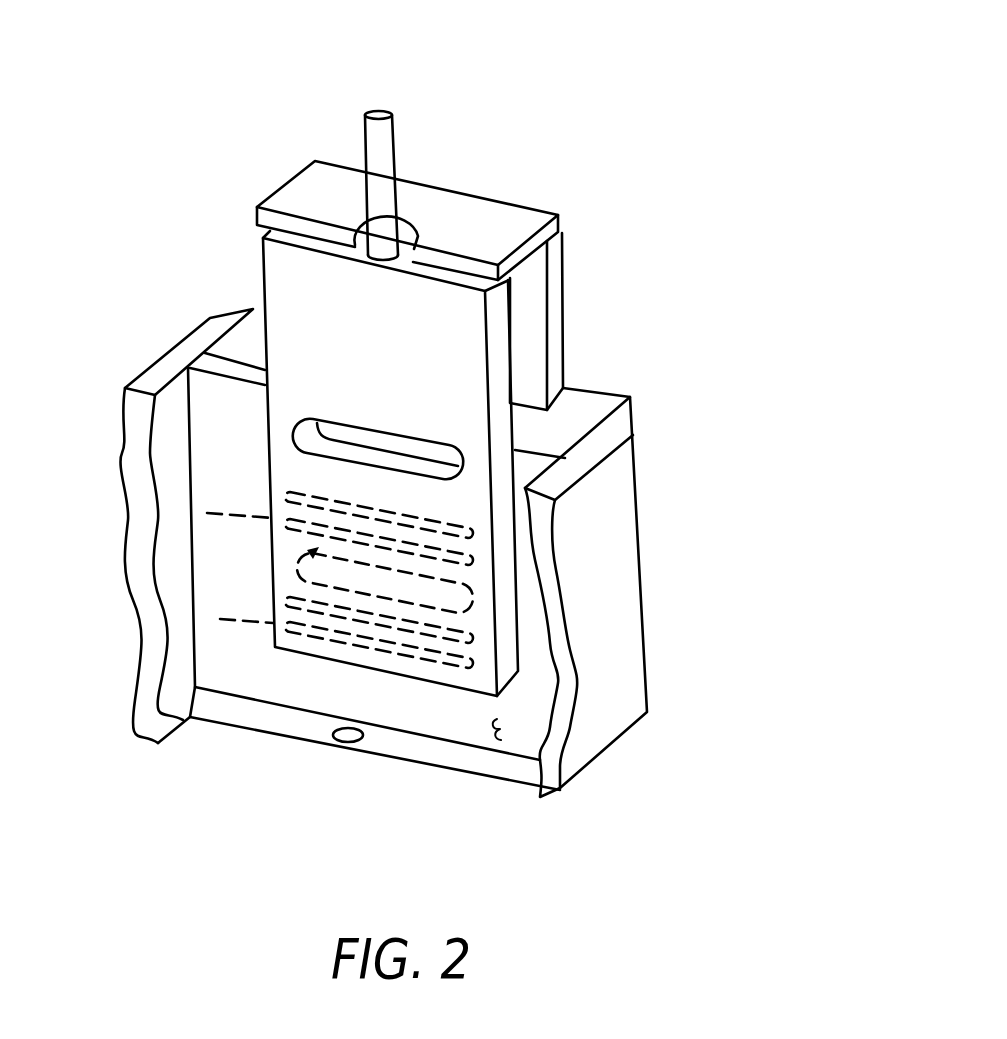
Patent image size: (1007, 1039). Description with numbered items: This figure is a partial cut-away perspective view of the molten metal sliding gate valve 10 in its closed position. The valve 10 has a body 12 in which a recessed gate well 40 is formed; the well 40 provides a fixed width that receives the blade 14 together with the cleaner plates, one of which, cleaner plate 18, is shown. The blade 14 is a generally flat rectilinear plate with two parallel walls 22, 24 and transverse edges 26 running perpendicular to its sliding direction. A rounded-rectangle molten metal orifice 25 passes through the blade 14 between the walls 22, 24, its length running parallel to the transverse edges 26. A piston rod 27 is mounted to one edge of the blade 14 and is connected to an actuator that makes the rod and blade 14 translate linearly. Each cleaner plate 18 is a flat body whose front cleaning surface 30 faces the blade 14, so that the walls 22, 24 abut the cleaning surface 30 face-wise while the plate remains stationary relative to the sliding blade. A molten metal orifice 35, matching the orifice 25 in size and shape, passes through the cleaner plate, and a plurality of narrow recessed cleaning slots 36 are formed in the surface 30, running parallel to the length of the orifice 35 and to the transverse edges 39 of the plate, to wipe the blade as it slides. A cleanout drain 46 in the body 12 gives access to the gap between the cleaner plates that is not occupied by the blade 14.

The molten metal sliding gate valve 10 is at (625, 135).
The body 12 is at (597, 397).
The blade 14 is at (292, 289).
The cleaner plate 18 is at (500, 729).
The wall 22 is at (425, 348).
The wall 24 is at (510, 306).
The molten metal orifice 25 is at (387, 458).
The transverse edge 26 is at (485, 655).
The piston rod 27 is at (385, 160).
The cleaning surface 30 is at (250, 678).
The molten metal orifice 35 is at (462, 591).
The cleaning slot 36 is at (277, 492).
The transverse edge 39 is at (450, 743).
The gate well 40 is at (227, 408).
The cleanout drain 46 is at (343, 742).